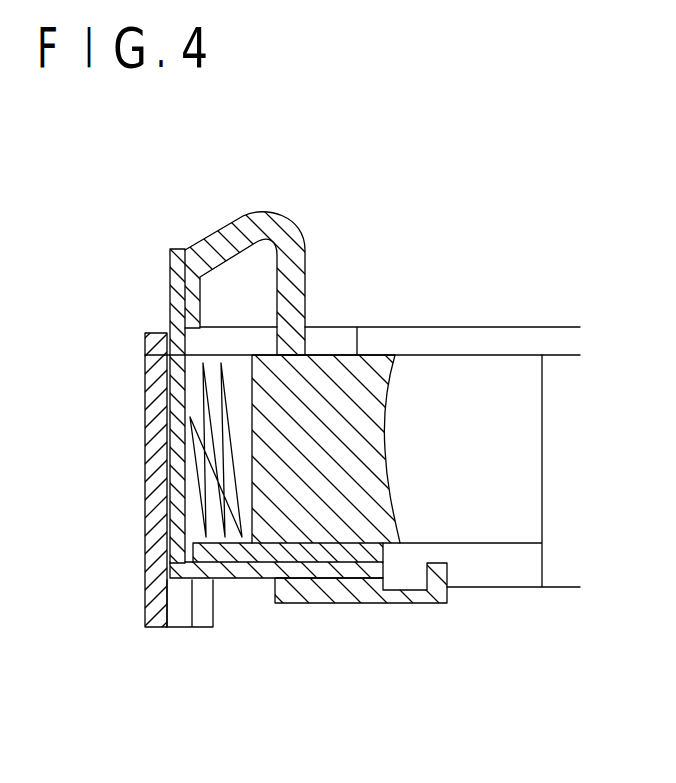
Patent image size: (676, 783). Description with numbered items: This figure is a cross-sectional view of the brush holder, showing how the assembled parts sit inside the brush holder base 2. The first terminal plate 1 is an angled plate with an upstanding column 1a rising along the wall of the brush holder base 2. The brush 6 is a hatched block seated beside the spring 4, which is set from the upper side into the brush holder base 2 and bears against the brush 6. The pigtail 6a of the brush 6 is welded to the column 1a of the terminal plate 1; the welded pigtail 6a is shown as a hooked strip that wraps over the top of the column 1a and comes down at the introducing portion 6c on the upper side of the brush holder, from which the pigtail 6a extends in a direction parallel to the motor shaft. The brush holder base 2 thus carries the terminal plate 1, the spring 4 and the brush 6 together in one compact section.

The first terminal plate 1 is at (243, 572).
The column 1a is at (168, 273).
The brush holder base 2 is at (143, 492).
The spring 4 is at (190, 382).
The brush 6 is at (357, 383).
The pigtail 6a is at (265, 222).
The introducing portion 6c is at (307, 350).